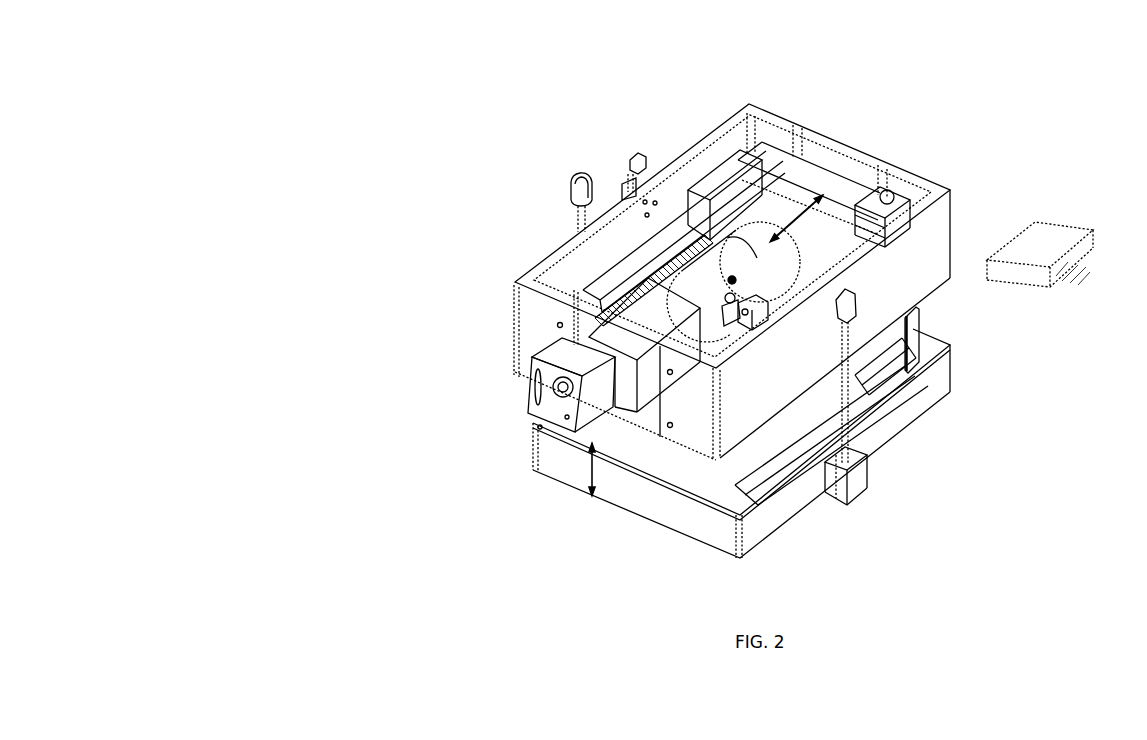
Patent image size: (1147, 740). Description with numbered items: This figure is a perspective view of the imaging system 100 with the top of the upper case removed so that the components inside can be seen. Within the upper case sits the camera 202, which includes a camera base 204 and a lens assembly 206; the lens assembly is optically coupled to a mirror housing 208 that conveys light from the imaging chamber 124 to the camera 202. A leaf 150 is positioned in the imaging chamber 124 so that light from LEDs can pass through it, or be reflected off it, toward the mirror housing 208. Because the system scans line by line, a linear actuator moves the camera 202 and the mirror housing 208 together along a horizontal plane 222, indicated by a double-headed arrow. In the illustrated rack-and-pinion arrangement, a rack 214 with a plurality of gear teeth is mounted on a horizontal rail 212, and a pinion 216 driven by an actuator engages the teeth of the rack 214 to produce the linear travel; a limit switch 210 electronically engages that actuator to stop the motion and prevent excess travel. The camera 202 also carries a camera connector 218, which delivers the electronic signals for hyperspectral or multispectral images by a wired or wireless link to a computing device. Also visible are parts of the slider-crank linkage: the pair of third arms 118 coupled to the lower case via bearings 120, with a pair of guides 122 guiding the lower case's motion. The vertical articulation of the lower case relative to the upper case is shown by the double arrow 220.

The imaging system 100 is at (259, 70).
The third arms 118 is at (577, 183).
The bearings 120 is at (855, 490).
The guides 122 is at (638, 153).
The imaging chamber 124 is at (700, 476).
The leaf 150 is at (1048, 226).
The camera 202 is at (528, 335).
The camera base 204 is at (587, 306).
The lens assembly 206 is at (748, 227).
The mirror housing 208 is at (790, 162).
The limit switch 210 is at (900, 205).
The horizontal rail 212 is at (600, 287).
The rack 214 is at (638, 292).
The pinion 216 is at (690, 243).
The camera connector 218 is at (755, 308).
The double arrow 220 is at (592, 470).
The horizontal plane 222 is at (805, 200).